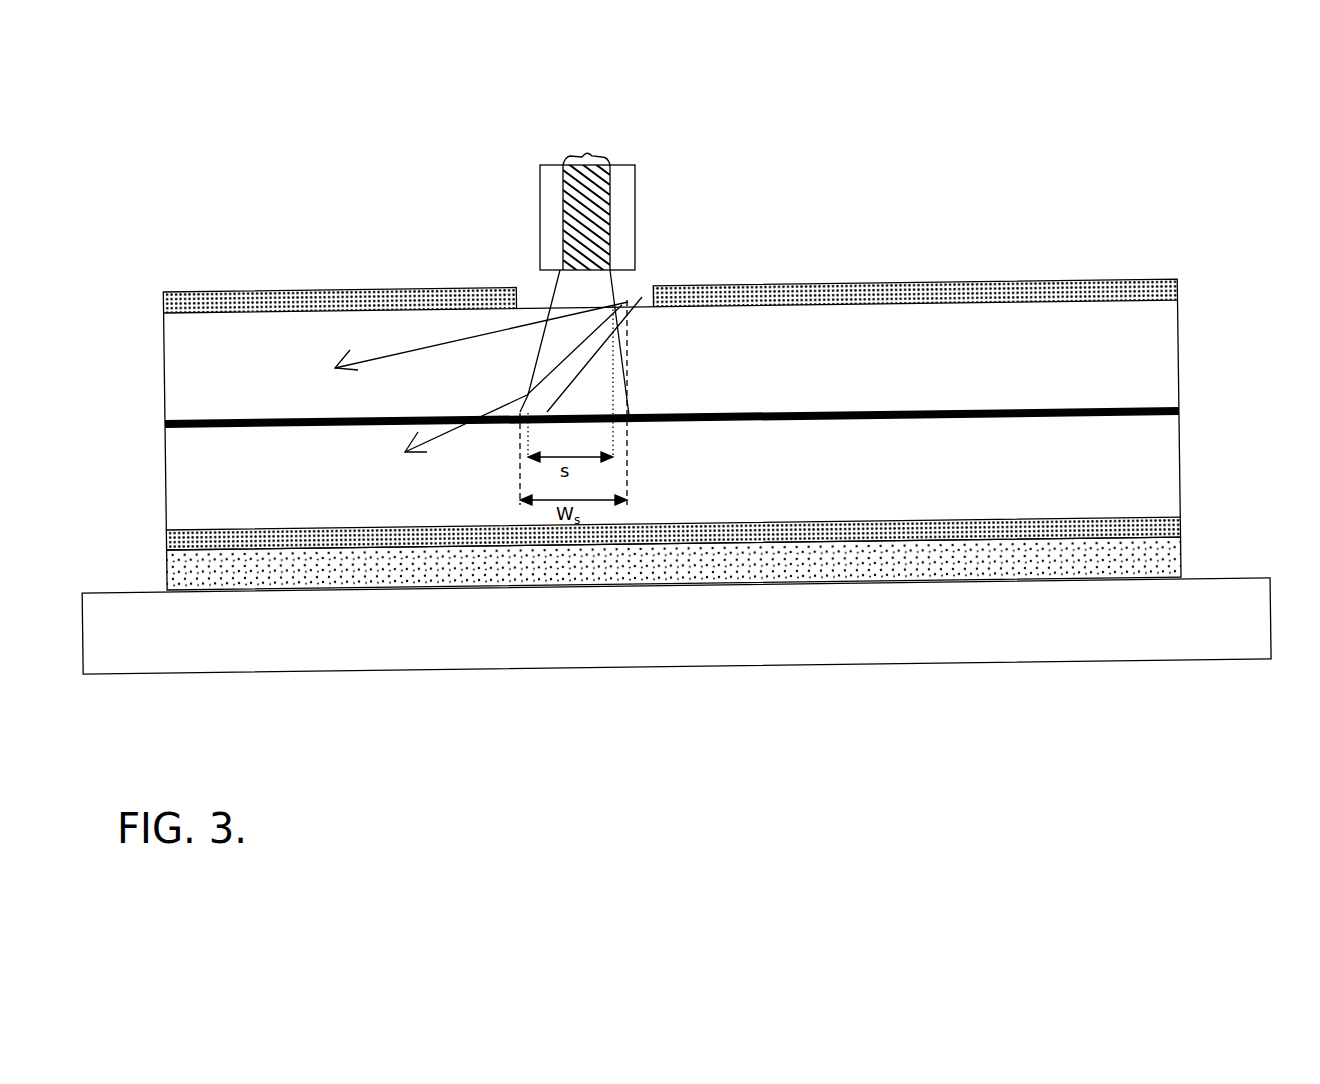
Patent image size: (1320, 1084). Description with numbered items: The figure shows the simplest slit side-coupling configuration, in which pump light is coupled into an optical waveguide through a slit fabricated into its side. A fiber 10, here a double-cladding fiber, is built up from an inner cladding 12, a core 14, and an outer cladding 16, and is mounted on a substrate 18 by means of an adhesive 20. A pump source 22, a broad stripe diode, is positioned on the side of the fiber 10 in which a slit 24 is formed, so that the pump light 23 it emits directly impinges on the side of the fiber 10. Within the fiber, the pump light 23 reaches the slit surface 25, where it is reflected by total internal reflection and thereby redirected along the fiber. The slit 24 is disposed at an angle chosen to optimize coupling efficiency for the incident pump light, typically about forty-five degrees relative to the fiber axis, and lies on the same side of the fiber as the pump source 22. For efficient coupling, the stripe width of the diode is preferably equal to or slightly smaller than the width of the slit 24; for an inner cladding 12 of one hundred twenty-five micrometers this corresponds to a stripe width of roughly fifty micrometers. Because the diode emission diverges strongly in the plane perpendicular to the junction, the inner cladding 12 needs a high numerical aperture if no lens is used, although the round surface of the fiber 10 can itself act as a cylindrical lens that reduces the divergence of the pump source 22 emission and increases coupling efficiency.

The fiber 10 is at (133, 183).
The inner cladding 12 is at (173, 367).
The core 14 is at (165, 424).
The outer cladding 16 is at (170, 292).
The substrate 18 is at (943, 633).
The adhesive 20 is at (1168, 552).
The pump source 22 is at (620, 165).
The pump light 23 is at (556, 293).
The slit 24 is at (642, 296).
The slit surface 25 is at (568, 362).